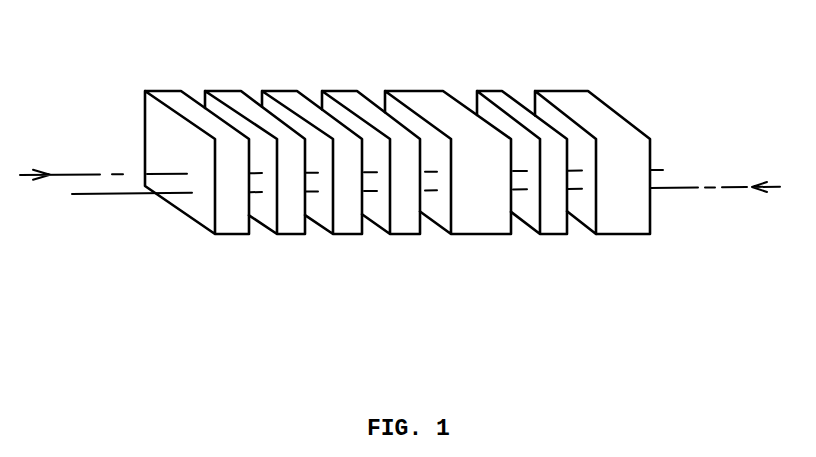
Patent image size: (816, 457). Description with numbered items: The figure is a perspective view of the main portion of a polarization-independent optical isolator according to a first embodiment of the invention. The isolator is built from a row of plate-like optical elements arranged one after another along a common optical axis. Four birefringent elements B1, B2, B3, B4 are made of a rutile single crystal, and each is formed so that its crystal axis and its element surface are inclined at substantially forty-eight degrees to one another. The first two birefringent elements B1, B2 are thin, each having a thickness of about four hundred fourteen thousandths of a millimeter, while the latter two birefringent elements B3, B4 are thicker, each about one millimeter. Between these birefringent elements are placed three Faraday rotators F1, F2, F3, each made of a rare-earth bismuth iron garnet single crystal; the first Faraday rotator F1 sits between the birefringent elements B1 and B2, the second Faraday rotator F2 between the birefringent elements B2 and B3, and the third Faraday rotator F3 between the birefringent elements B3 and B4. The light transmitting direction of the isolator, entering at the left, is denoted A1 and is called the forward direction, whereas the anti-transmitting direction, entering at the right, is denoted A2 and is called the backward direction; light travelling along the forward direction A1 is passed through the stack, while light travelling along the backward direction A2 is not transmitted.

The birefringent element B1 is at (232, 236).
The Faraday rotator F1 is at (220, 91).
The birefringent element B2 is at (357, 236).
The Faraday rotator F2 is at (335, 91).
The birefringent element B3 is at (483, 236).
The Faraday rotator F3 is at (485, 91).
The birefringent element B4 is at (618, 236).
The forward direction A1 is at (72, 174).
The backward direction A2 is at (693, 189).